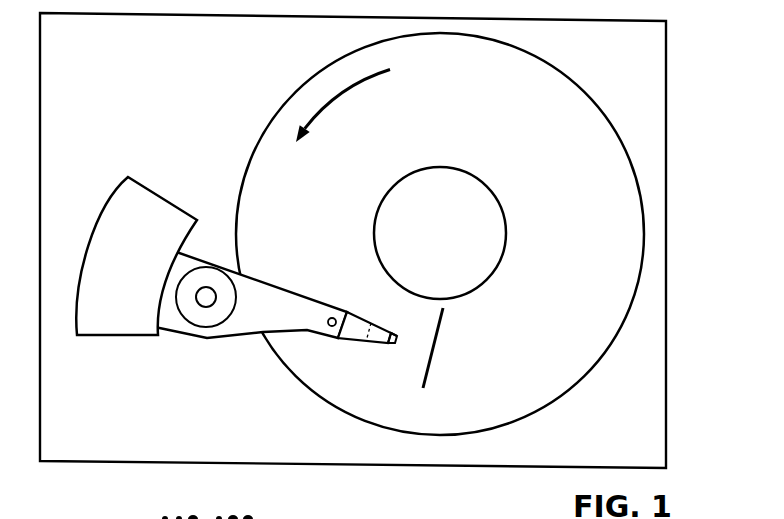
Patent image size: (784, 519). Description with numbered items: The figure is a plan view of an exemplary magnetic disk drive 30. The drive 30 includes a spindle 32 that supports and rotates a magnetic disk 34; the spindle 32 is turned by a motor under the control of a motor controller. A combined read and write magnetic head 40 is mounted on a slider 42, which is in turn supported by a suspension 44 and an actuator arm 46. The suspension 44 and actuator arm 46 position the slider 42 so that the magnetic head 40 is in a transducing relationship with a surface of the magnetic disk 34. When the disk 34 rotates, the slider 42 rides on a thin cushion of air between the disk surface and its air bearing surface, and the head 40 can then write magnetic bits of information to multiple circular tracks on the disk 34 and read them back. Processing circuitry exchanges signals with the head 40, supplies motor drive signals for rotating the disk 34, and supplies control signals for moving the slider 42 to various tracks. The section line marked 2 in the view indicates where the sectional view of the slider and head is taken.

The magnetic disk drive 30 is at (694, 49).
The spindle 32 is at (480, 178).
The magnetic disk 34 is at (589, 258).
The magnetic head 40 is at (398, 341).
The slider 42 is at (394, 333).
The suspension 44 is at (355, 338).
The actuator arm 46 is at (263, 277).
The section line 2- 2 is at (457, 317).